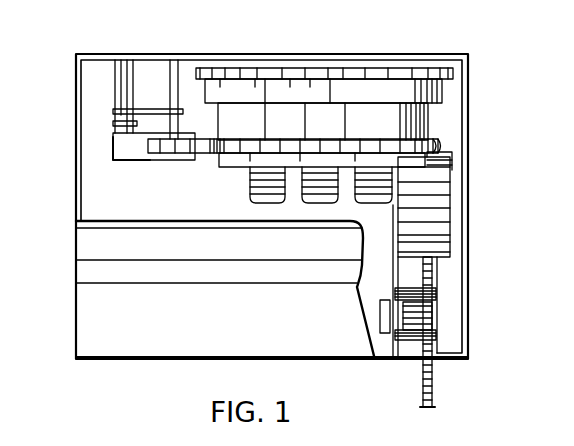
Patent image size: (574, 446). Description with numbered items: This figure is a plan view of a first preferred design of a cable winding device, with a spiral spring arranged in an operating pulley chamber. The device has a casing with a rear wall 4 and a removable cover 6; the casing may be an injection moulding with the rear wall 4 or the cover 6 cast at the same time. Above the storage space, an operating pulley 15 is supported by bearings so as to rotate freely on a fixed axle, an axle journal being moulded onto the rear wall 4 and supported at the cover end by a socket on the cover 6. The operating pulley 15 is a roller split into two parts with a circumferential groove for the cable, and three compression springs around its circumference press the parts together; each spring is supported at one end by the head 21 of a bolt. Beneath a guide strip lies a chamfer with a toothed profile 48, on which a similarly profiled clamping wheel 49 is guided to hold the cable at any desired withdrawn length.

The rear wall 4 is at (232, 56).
The removable cover 6 is at (103, 284).
The operating pulley 15 is at (340, 100).
The head 21 is at (252, 192).
The toothed profile 48 is at (410, 291).
The clamping wheel 49 is at (420, 318).